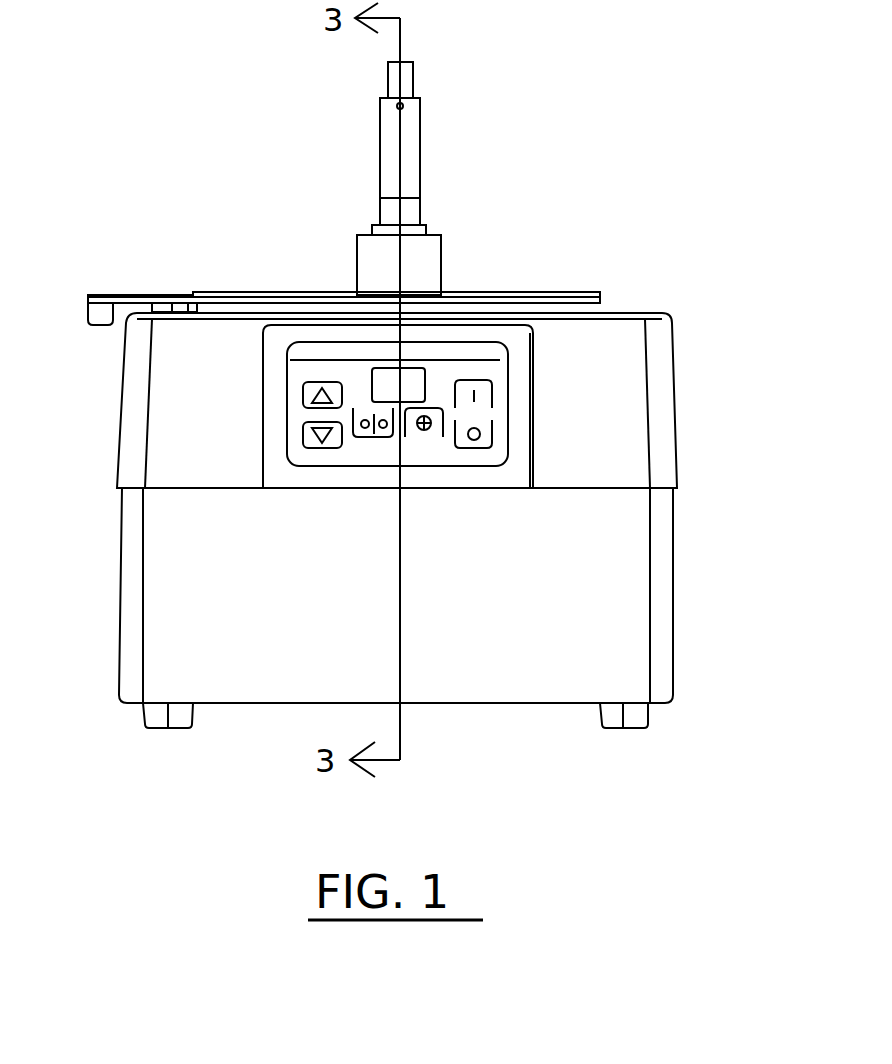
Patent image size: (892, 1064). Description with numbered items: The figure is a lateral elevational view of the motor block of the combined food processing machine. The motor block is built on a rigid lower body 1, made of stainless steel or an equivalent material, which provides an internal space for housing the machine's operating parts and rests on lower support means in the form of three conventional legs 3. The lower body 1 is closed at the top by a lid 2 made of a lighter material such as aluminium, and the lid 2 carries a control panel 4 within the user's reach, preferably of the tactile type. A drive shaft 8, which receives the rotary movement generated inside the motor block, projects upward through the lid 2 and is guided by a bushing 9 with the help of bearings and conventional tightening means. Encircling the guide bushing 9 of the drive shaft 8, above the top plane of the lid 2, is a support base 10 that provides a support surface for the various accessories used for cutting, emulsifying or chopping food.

The lower body 1 is at (590, 562).
The lid 2 is at (595, 405).
The legs 3 is at (157, 713).
The control panel 4 is at (468, 370).
The drive shaft 8 is at (422, 125).
The bushing 9 is at (375, 262).
The support base 10 is at (467, 295).